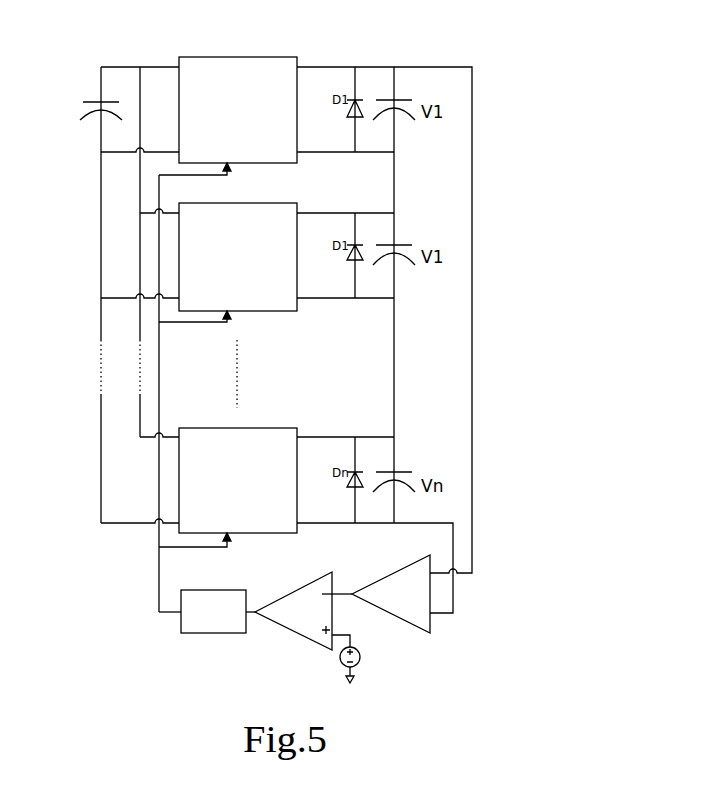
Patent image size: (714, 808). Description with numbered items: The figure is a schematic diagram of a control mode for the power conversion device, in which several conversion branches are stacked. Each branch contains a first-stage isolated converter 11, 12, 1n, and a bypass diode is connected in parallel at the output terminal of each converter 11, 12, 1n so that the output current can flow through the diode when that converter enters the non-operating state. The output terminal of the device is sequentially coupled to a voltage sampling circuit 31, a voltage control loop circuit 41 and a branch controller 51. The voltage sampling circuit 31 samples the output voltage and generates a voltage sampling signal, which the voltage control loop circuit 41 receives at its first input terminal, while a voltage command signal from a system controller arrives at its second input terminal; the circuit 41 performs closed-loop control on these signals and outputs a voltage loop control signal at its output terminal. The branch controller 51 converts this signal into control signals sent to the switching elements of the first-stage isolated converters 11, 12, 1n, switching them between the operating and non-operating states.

The first-stage isolated converter 11 is at (224, 62).
The first-stage isolated converter 12 is at (180, 239).
The first-stage isolated converter 1n is at (235, 435).
The voltage sampling circuit 31 is at (420, 622).
The voltage control loop circuit 41 is at (300, 620).
The branch controller 51 is at (202, 620).